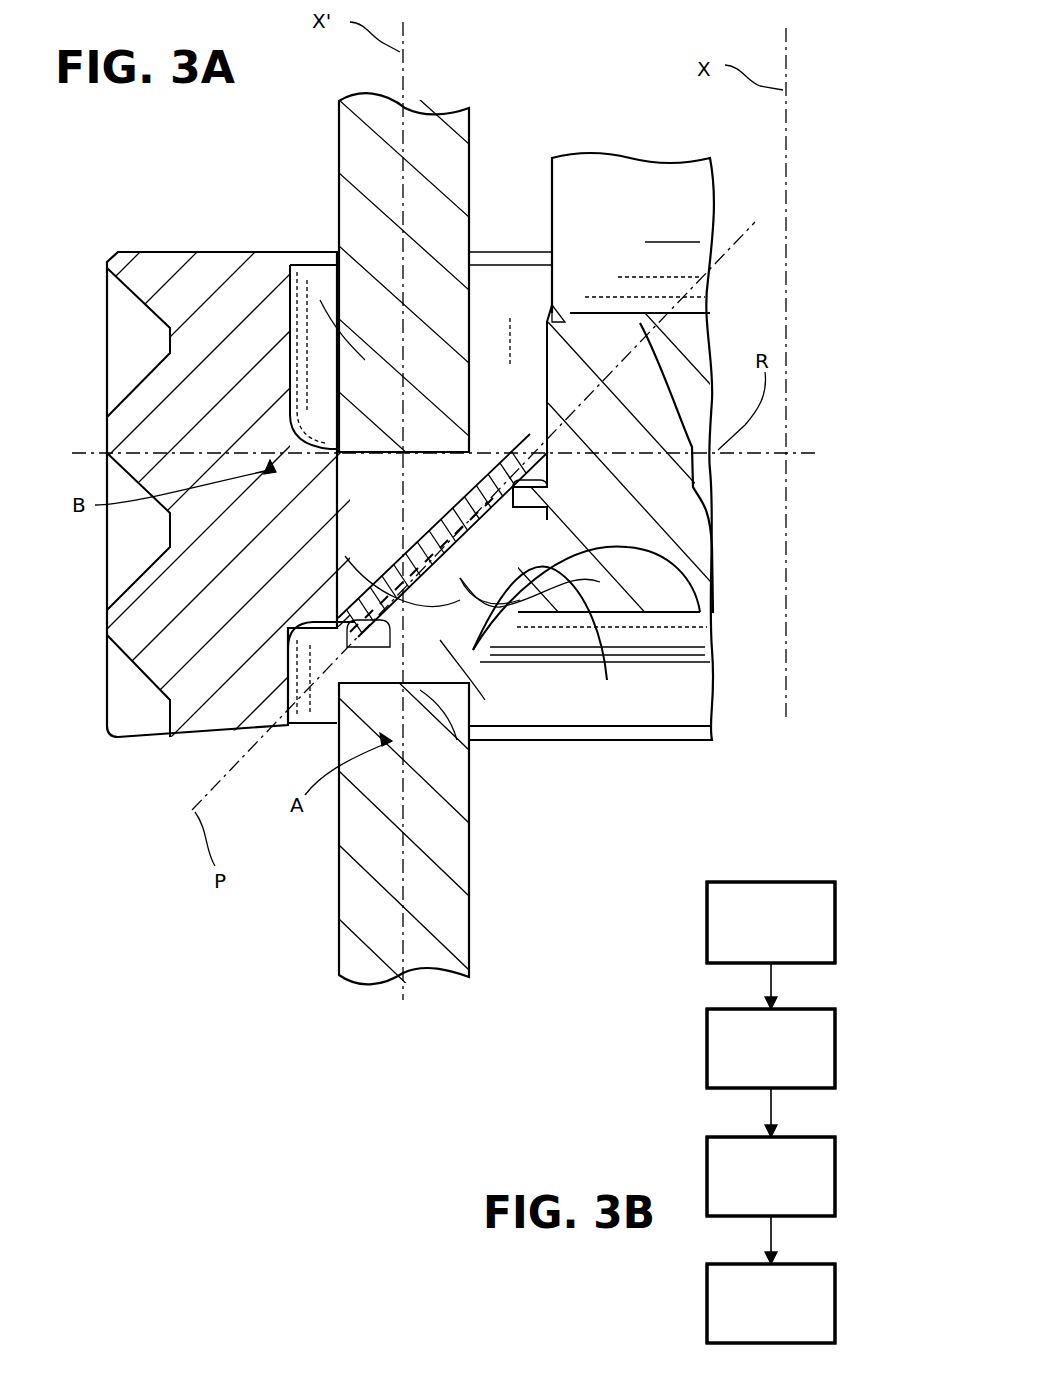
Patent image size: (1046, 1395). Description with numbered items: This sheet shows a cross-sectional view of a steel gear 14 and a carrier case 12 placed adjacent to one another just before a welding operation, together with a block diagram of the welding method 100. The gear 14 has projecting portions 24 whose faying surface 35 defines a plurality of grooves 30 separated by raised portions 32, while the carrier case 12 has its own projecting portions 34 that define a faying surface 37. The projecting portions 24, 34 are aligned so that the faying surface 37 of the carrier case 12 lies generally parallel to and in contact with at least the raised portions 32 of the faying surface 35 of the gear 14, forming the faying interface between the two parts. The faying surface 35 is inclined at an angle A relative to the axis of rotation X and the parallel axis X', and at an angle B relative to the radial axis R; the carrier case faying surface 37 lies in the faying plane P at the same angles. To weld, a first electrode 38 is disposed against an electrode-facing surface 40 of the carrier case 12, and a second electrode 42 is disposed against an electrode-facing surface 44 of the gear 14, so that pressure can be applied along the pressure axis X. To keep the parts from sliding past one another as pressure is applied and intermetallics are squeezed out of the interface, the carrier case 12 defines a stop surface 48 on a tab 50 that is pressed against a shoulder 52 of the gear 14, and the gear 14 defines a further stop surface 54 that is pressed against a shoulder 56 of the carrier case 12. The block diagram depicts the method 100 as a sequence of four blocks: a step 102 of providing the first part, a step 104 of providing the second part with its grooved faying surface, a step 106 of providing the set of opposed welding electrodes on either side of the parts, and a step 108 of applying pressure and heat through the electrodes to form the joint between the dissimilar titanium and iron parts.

In FIG. 3A, the carrier case 12 is at (613, 330).
In FIG. 3A, the gear 14 is at (190, 262).
In FIG. 3A, the projecting portions 24 is at (440, 600).
In FIG. 3A, the grooves 30 is at (565, 578).
In FIG. 3A, the raised portions 32 is at (447, 540).
In FIG. 3A, the projecting portions 34 is at (457, 740).
In FIG. 3A, the faying surface 35 is at (600, 582).
In FIG. 3A, the faying surface 37 is at (447, 540).
In FIG. 3A, the first electrode 38 is at (445, 910).
In FIG. 3A, the electrode-facing surface 40 is at (455, 630).
In FIG. 3A, the second electrode 42 is at (432, 135).
In FIG. 3A, the electrode-facing surface 44 is at (330, 450).
In FIG. 3A, the stop surface 48 is at (370, 643).
In FIG. 3A, the tab 50 is at (350, 680).
In FIG. 3A, the shoulder 52 is at (350, 665).
In FIG. 3A, the stop surface 54 is at (500, 512).
In FIG. 3A, the shoulder 56 is at (532, 480).
In FIG. 3B, the method 100 is at (885, 882).
In FIG. 3B, the step of providing a first part 102 is at (771, 922).
In FIG. 3B, the step of providing a second part 104 is at (771, 1048).
In FIG. 3B, the step of providing a set of opposed welding electrodes 106 is at (771, 1176).
In FIG. 3B, the step of applying pressure 108 is at (771, 1303).